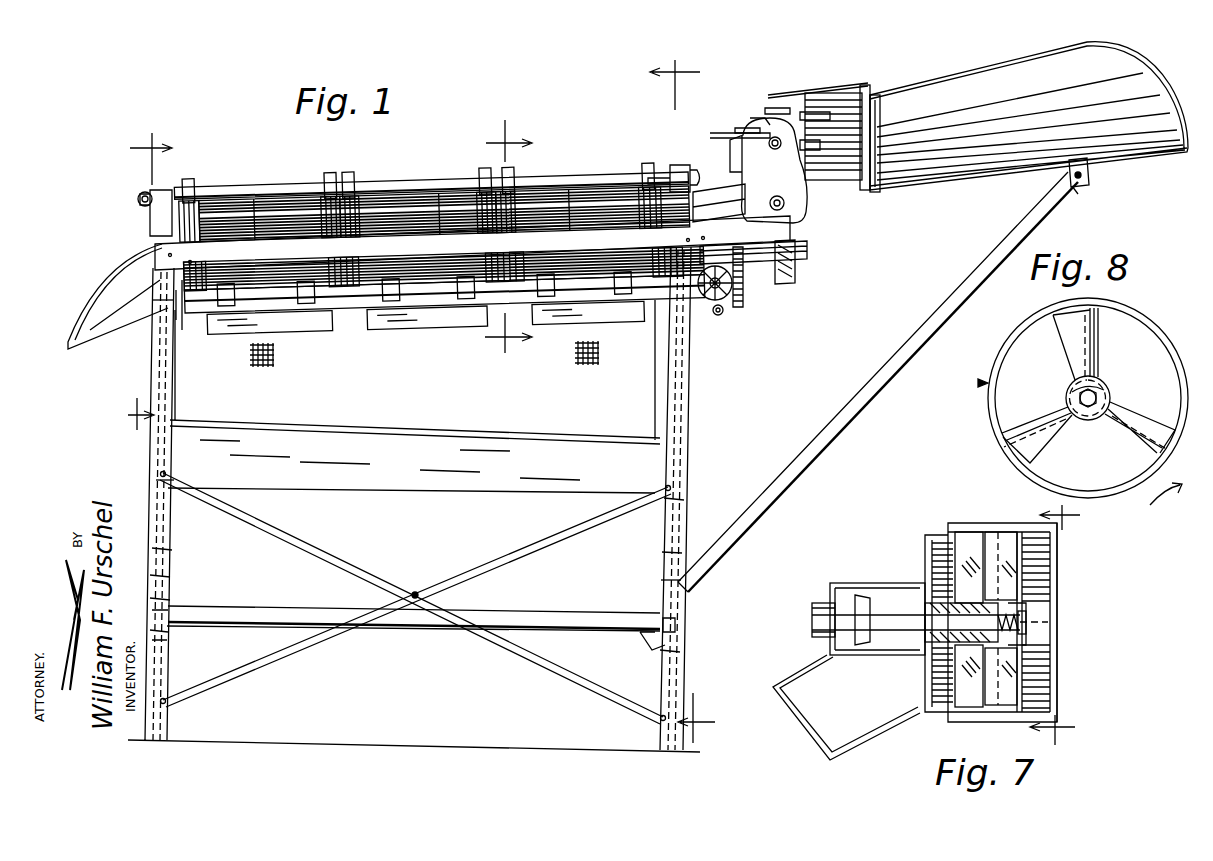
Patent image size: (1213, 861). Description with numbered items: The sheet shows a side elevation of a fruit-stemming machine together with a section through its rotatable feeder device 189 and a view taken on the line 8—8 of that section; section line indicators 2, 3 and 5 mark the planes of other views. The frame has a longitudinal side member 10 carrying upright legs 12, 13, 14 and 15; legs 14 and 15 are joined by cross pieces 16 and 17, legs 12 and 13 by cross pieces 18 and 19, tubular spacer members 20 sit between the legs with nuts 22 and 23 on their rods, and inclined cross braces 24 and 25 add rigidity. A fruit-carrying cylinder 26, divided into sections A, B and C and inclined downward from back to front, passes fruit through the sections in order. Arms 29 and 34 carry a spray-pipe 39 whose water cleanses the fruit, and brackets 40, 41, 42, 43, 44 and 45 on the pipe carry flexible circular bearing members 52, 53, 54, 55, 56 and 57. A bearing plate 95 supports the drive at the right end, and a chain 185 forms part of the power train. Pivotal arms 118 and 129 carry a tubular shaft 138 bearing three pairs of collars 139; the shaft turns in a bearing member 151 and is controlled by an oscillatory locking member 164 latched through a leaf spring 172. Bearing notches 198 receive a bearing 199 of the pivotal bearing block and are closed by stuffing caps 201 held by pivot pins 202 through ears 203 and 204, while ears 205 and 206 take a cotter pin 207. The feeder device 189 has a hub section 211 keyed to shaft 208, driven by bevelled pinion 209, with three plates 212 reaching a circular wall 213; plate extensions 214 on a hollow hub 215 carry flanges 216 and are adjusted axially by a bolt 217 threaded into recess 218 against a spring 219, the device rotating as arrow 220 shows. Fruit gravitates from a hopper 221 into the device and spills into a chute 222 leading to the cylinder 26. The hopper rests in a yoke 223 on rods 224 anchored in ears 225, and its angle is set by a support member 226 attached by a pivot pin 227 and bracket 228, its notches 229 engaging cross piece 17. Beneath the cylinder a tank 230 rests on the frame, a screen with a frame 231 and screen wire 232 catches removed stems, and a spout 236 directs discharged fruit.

In FIG. 1, the section line 2 is at (686, 401).
In FIG. 1, the section line 3 is at (145, 273).
In FIG. 1, the section line 5 is at (508, 231).
In FIG. 8, the section line 8— 8 is at (1067, 517).
In FIG. 7, the section line 8— 8 is at (1060, 730).
In FIG. 1, the cylinder section A is at (568, 190).
In FIG. 1, the cylinder section B is at (437, 185).
In FIG. 1, the cylinder section C is at (262, 196).
In FIG. 1, the longitudinal side member 10 is at (175, 256).
In FIG. 1, the upright leg 12 is at (165, 576).
In FIG. 1, the upright leg 13 is at (166, 551).
In FIG. 1, the upright leg 14 is at (665, 580).
In FIG. 1, the upright leg 15 is at (665, 556).
In FIG. 1, the cross piece 16 is at (668, 505).
In FIG. 1, the cross piece 17 is at (683, 658).
In FIG. 1, the cross piece 18 is at (170, 500).
In FIG. 1, the cross piece 19 is at (163, 600).
In FIG. 1, the tubular spacer member 20 is at (527, 614).
In FIG. 1, the nut 22 is at (680, 625).
In FIG. 1, the nut 23 is at (165, 640).
In FIG. 1, the inclined cross brace 24 is at (318, 545).
In FIG. 1, the inclined cross brace 25 is at (520, 550).
In FIG. 1, the fruit-carrying cylinder 26 is at (413, 196).
In FIG. 1, the arm 29 is at (150, 196).
In FIG. 1, the arm 34 is at (682, 165).
In FIG. 1, the spray-pipe 39 is at (252, 186).
In FIG. 1, the bracket 40 is at (190, 174).
In FIG. 1, the bracket 41 is at (330, 172).
In FIG. 1, the bracket 42 is at (362, 162).
In FIG. 1, the bracket 43 is at (484, 170).
In FIG. 1, the bracket 44 is at (512, 170).
In FIG. 1, the bracket 45 is at (650, 168).
In FIG. 1, the flexible circular bearing member 52 is at (198, 210).
In FIG. 1, the flexible circular bearing member 53 is at (328, 205).
In FIG. 1, the flexible circular bearing member 54 is at (358, 205).
In FIG. 1, the flexible circular bearing member 55 is at (482, 205).
In FIG. 1, the flexible circular bearing member 56 is at (516, 205).
In FIG. 1, the flexible circular bearing member 57 is at (646, 200).
In FIG. 1, the bearing plate 95 is at (783, 204).
In FIG. 1, the arm 118 is at (182, 320).
In FIG. 1, the arm 129 is at (700, 262).
In FIG. 1, the tubular shaft 138 is at (352, 328).
In FIG. 1, the collar 139 is at (548, 288).
In FIG. 1, the bearing member 151 is at (150, 320).
In FIG. 1, the oscillatory locking member 164 is at (723, 312).
In FIG. 1, the leaf spring 172 is at (716, 300).
In FIG. 1, the chain 185 is at (745, 265).
In FIG. 1, the rotatable feeder device 189 is at (832, 80).
In FIG. 8, the rotatable feeder device 189 is at (988, 383).
In FIG. 7, the rotatable feeder device 189 is at (982, 508).
In FIG. 1, the vertical notch 198 is at (793, 110).
In FIG. 1, the bearing 199 is at (770, 195).
In FIG. 1, the stuffing cap 201 is at (770, 108).
In FIG. 1, the pivot pin 202 is at (736, 129).
In FIG. 1, the ear 203 is at (758, 118).
In FIG. 1, the ear 204 is at (745, 135).
In FIG. 1, the ear 205 is at (830, 120).
In FIG. 1, the ear 206 is at (812, 146).
In FIG. 1, the cotter pin 207 is at (777, 148).
In FIG. 7, the shaft 208 is at (812, 614).
In FIG. 7, the bevelled pinion 209 is at (860, 597).
In FIG. 7, the hub section 211 is at (950, 612).
In FIG. 8, the radially disposed plate 212 is at (1022, 428).
In FIG. 7, the radially disposed plate 212 is at (945, 535).
In FIG. 8, the circular wall 213 is at (1175, 340).
In FIG. 7, the circular wall 213 is at (963, 535).
In FIG. 8, the plate extension 214 is at (1097, 320).
In FIG. 7, the plate extension 214 is at (1040, 570).
In FIG. 8, the hollow hub 215 is at (1068, 388).
In FIG. 7, the hollow hub 215 is at (1040, 662).
In FIG. 8, the flange 216 is at (1085, 345).
In FIG. 7, the flange 216 is at (1008, 532).
In FIG. 8, the bolt 217 is at (1088, 410).
In FIG. 7, the bolt 217 is at (1028, 625).
In FIG. 7, the threaded recess 218 is at (1022, 620).
In FIG. 7, the spring 219 is at (1030, 634).
In FIG. 8, the arrow 220 is at (1161, 507).
In FIG. 1, the hopper 221 is at (990, 75).
In FIG. 1, the chute 222 is at (718, 192).
In FIG. 7, the chute 222 is at (798, 688).
In FIG. 1, the yoke 223 is at (878, 190).
In FIG. 1, the rod 224 is at (864, 90).
In FIG. 1, the ear 225 is at (768, 92).
In FIG. 1, the support member 226 is at (865, 410).
In FIG. 1, the pivot pin 227 is at (1089, 180).
In FIG. 1, the bracket 228 is at (1070, 177).
In FIG. 1, the notch 229 is at (645, 648).
In FIG. 1, the tank 230 is at (433, 495).
In FIG. 1, the frame 231 is at (690, 395).
In FIG. 1, the screen wire 232 is at (552, 403).
In FIG. 1, the spout 236 is at (105, 290).